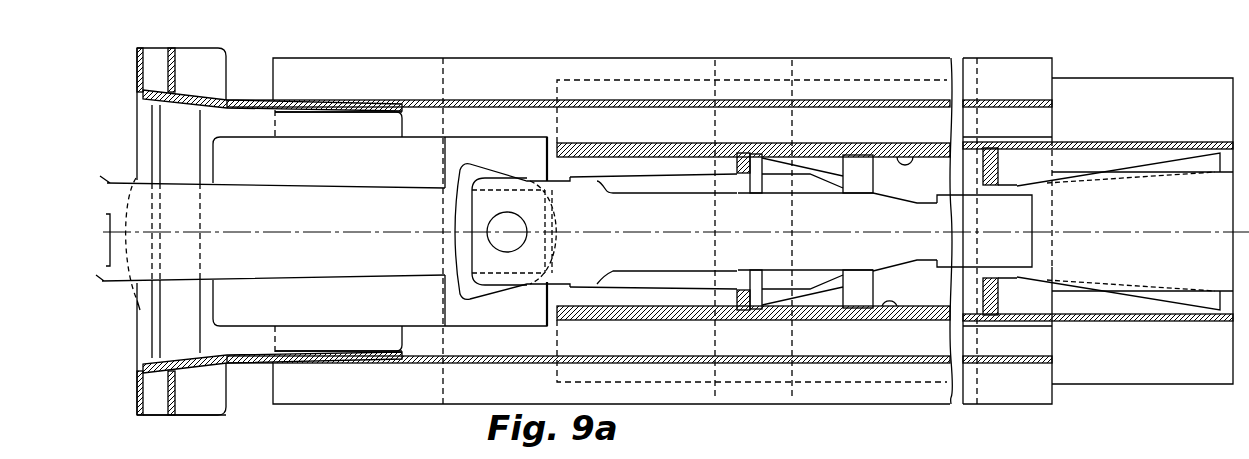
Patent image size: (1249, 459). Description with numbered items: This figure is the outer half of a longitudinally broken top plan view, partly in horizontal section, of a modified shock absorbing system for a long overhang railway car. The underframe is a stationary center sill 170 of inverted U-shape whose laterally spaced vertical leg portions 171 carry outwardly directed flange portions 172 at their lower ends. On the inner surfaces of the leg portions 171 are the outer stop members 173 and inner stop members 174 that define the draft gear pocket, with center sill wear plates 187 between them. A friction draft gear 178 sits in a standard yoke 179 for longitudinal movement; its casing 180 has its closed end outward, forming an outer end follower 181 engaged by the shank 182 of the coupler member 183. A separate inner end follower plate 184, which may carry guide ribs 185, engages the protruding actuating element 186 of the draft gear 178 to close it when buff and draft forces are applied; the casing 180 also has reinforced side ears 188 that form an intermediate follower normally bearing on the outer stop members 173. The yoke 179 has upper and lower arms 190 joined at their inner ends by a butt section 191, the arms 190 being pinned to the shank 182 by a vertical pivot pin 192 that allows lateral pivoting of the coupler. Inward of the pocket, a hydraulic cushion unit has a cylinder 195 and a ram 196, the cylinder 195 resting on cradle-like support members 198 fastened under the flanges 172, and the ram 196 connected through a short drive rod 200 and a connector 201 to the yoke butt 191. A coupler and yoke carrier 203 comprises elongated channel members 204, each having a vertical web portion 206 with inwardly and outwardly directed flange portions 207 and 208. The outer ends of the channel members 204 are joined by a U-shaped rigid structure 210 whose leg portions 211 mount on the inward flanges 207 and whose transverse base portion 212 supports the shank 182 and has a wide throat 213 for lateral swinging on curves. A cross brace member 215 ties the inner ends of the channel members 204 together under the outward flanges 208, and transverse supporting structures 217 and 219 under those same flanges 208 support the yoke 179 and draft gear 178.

The stationary center sill 170 is at (1087, 328).
The vertical leg portions 171 is at (1122, 143).
The outwardly directed flange portions 172 is at (1195, 95).
The outer stop members 173 is at (745, 152).
The inner stop members 174 is at (1002, 165).
The friction draft gear 178 is at (629, 166).
The yoke 179 is at (676, 181).
The casing 180 is at (607, 185).
The outer end follower 181 is at (522, 185).
The shank 182 is at (421, 190).
The coupler member 183 is at (120, 190).
The inner end follower plate 184 is at (858, 172).
The guide ribs 185 is at (829, 163).
The actuating element 186 is at (820, 300).
The center sill wear plates 187 is at (917, 195).
The side flanges or ears 188 is at (756, 160).
The upper and lower arms 190 is at (656, 247).
The butt section 191 is at (912, 290).
The pivot pin 192 is at (512, 242).
The cylinder 195 is at (311, 454).
The ram or piston 196 is at (1186, 258).
The cradle-like support members 198 is at (439, 454).
The short drive rod 200 is at (1028, 262).
The connector 201 is at (927, 217).
The coupler and yoke carrier 203 is at (200, 420).
The channel members 204 is at (293, 57).
The vertical web portion 206 is at (474, 99).
The inwardly directed flange portions 207 is at (400, 128).
The outwardly directed flange portions 208 is at (372, 97).
The U-shaped rigid structure 210 is at (133, 311).
The leg portions 211 is at (252, 126).
The transversely extending base portion 212 is at (215, 302).
The wide throat 213 is at (165, 352).
The cross brace member 215 is at (965, 404).
The supporting structure 217 is at (790, 340).
The supporting structure 219 is at (455, 315).